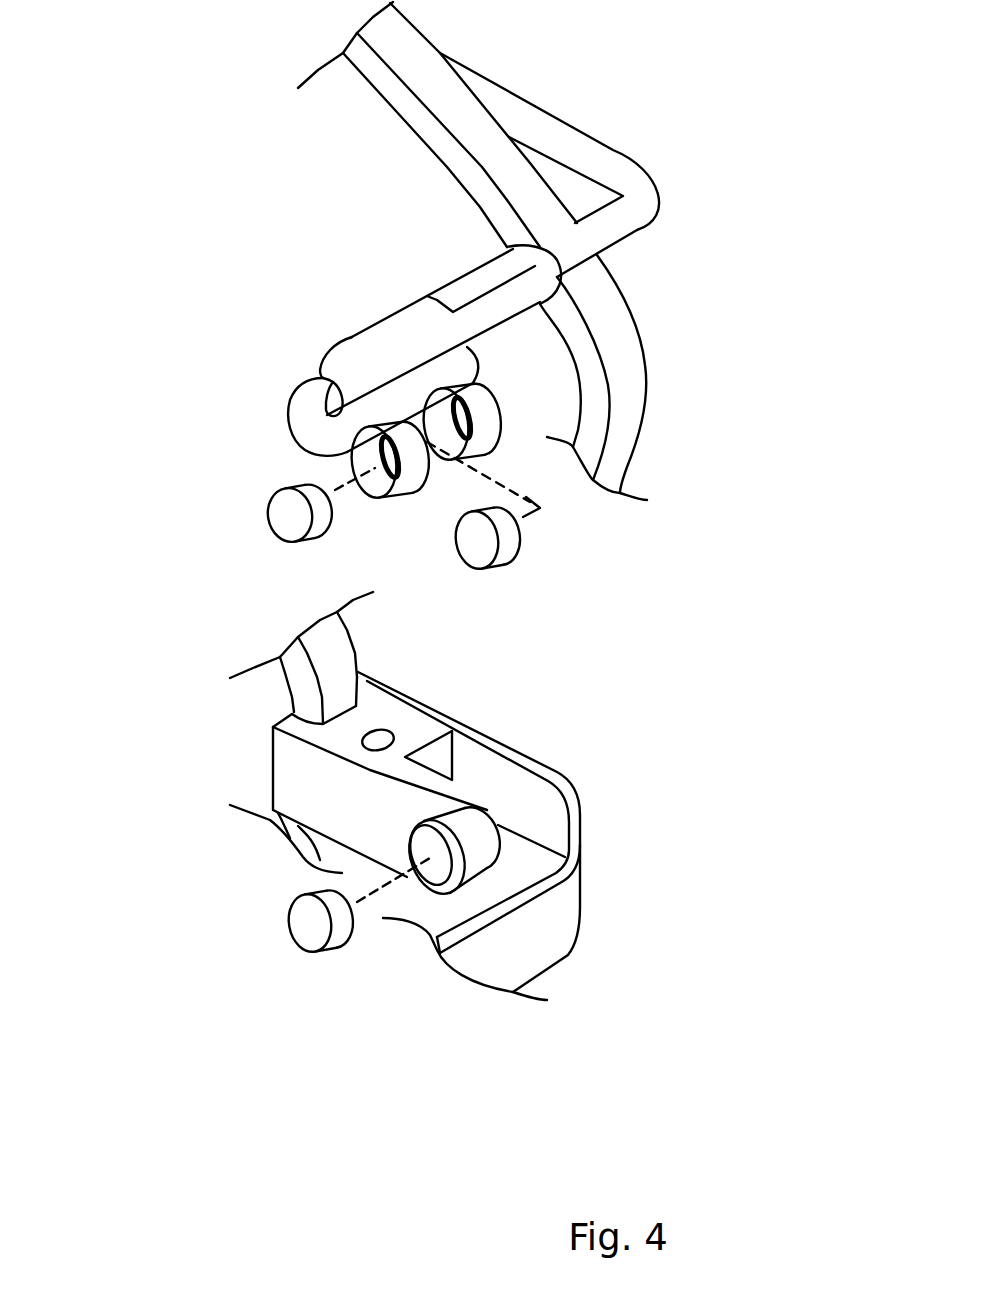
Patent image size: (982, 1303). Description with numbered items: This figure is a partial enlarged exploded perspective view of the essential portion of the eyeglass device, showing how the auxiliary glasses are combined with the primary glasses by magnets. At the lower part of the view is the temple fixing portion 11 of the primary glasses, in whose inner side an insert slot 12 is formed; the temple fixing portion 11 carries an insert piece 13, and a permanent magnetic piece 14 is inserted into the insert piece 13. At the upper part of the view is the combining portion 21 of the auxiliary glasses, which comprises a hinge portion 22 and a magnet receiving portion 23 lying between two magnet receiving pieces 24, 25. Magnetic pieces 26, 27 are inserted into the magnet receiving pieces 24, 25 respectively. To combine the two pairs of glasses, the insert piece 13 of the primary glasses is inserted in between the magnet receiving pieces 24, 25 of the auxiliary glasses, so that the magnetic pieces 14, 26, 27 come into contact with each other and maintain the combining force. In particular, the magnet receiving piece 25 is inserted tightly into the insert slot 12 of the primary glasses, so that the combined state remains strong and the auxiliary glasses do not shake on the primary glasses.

The temple fixing portion 11 is at (225, 905).
The insert slot 12 is at (483, 775).
The insert piece 13 is at (478, 847).
The permanent magnetic piece 14 is at (315, 942).
The combining portion 21 is at (665, 115).
The hinge portion 22 is at (398, 337).
The magnet receiving portion 23 is at (303, 407).
The magnet receiving piece 24 is at (487, 411).
The magnet receiving piece 25 is at (416, 476).
The magnetic piece 26 is at (510, 548).
The magnetic piece 27 is at (282, 522).